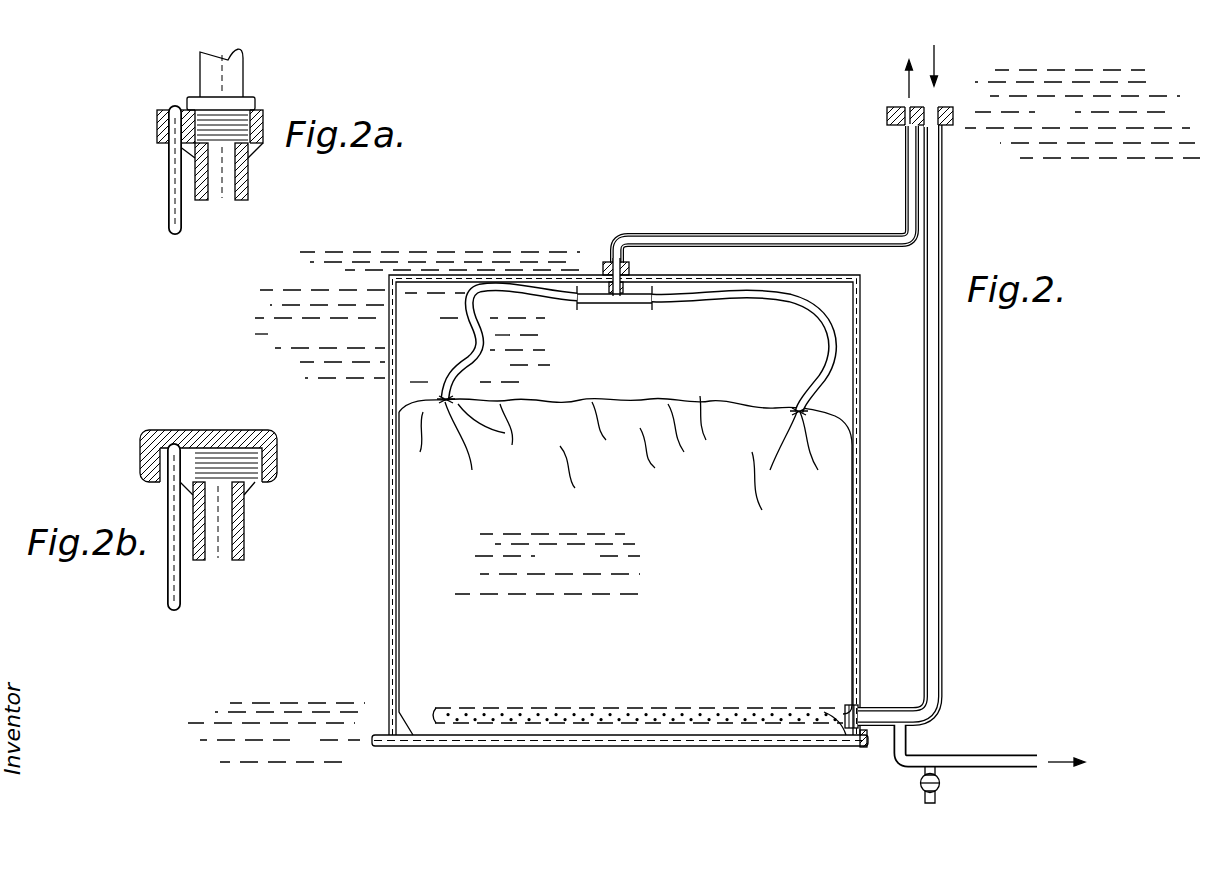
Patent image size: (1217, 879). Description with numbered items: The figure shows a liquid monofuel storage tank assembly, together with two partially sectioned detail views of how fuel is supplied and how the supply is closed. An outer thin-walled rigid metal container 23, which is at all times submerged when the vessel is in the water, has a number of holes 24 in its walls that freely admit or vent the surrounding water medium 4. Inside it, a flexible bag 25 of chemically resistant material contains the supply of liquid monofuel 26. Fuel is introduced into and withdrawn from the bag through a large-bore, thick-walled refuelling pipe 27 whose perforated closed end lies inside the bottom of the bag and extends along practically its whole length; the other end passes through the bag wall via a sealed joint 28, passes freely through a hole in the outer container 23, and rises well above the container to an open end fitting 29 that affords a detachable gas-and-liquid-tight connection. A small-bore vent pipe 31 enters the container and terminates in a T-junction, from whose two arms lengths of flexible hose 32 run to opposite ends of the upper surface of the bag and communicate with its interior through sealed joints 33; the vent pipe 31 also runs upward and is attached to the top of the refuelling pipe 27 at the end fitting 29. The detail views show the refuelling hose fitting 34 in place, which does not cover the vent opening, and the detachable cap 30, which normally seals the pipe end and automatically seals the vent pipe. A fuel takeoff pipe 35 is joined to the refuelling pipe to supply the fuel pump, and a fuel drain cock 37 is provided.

In FIG. 2, the water medium 4 is at (437, 335).
In FIG. 2, the outer container 23 is at (424, 274).
In FIG. 2, the holes 24 is at (584, 273).
In FIG. 2, the flexible bag 25 is at (702, 400).
In FIG. 2, the liquid monofuel 26 is at (597, 576).
In FIG. 2, the refuelling pipe 27 is at (935, 428).
In FIG. 2, the sealed joint 28 is at (845, 707).
In FIG. 2, the open end fitting 29 is at (887, 117).
In FIG. 2B, the detachable cap 30 is at (148, 432).
In FIG. 2, the vent pipe 31 is at (771, 236).
In FIG. 2, the flexible hose 32 is at (480, 345).
In FIG. 2, the sealed joints 33 is at (870, 403).
In FIG. 2A, the refuelling hose fitting 34 is at (243, 90).
In FIG. 2, the fuel takeoff pipe 35 is at (1010, 757).
In FIG. 2, the fuel drain cock 37 is at (940, 784).